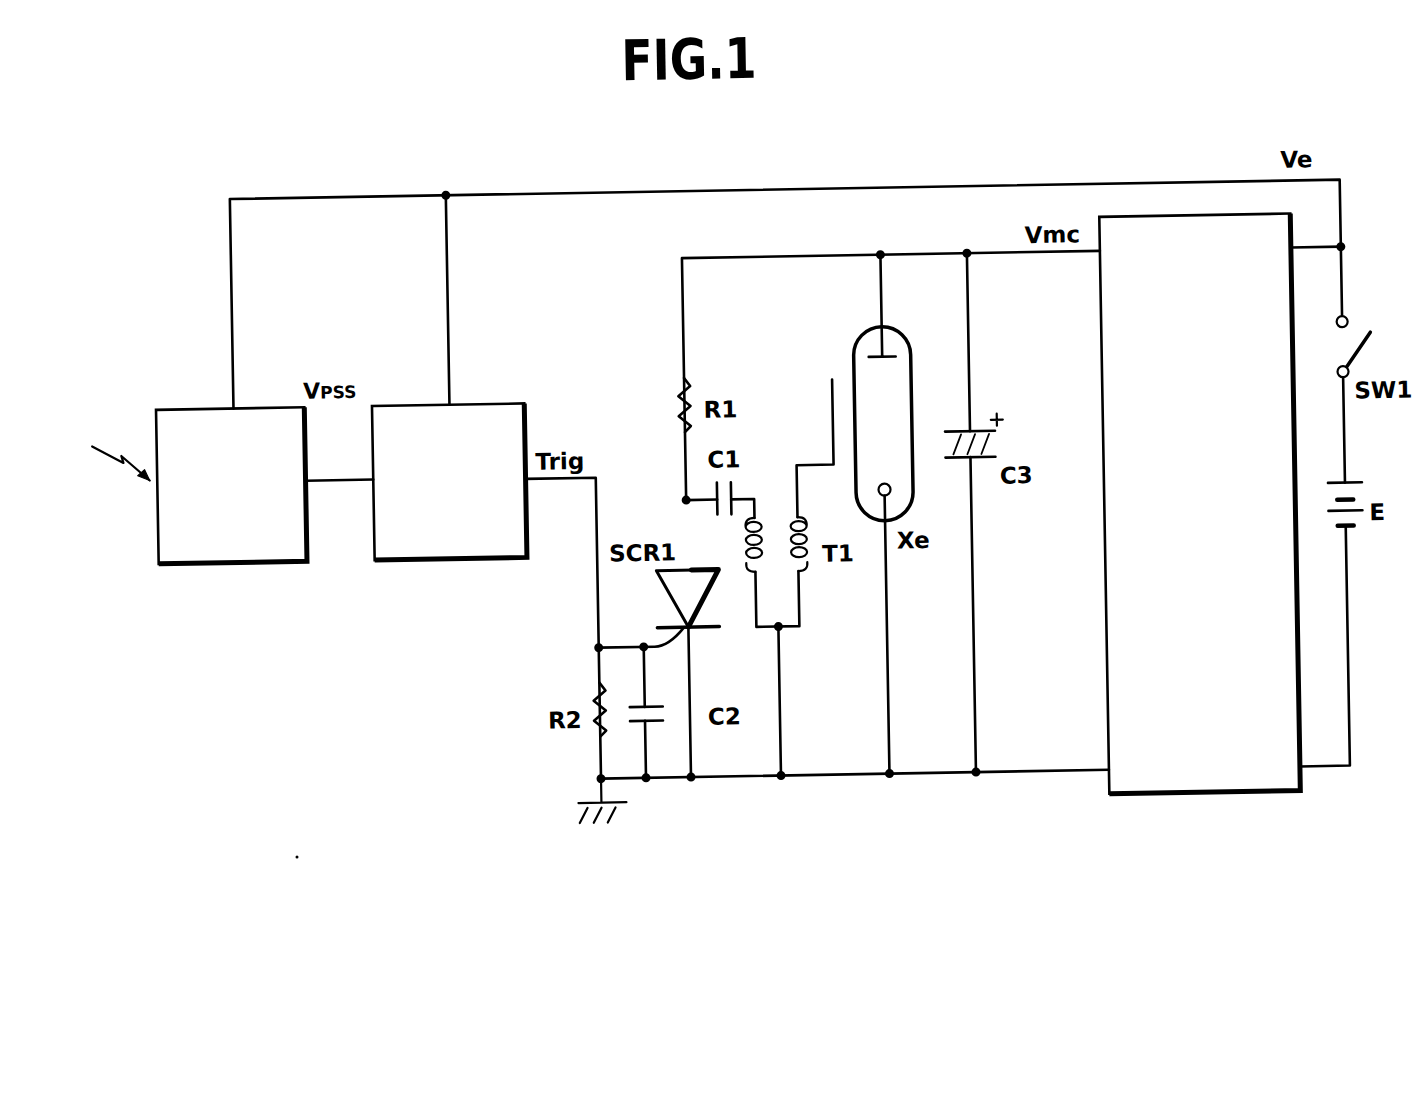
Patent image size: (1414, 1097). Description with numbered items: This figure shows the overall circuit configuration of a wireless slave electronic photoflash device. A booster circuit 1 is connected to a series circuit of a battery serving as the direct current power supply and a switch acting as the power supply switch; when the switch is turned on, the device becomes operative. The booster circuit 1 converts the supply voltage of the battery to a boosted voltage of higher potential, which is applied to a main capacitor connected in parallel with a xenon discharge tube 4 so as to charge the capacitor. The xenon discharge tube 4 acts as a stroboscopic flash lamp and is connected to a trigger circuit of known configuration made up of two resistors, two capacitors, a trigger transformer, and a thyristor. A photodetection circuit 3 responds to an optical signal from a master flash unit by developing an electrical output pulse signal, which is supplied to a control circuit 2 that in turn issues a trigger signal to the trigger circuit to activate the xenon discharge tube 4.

The booster circuit 1 is at (1177, 802).
The control circuit 2 is at (445, 556).
The photodetection circuit 3 is at (247, 554).
The xenon discharge tube 4 is at (903, 333).